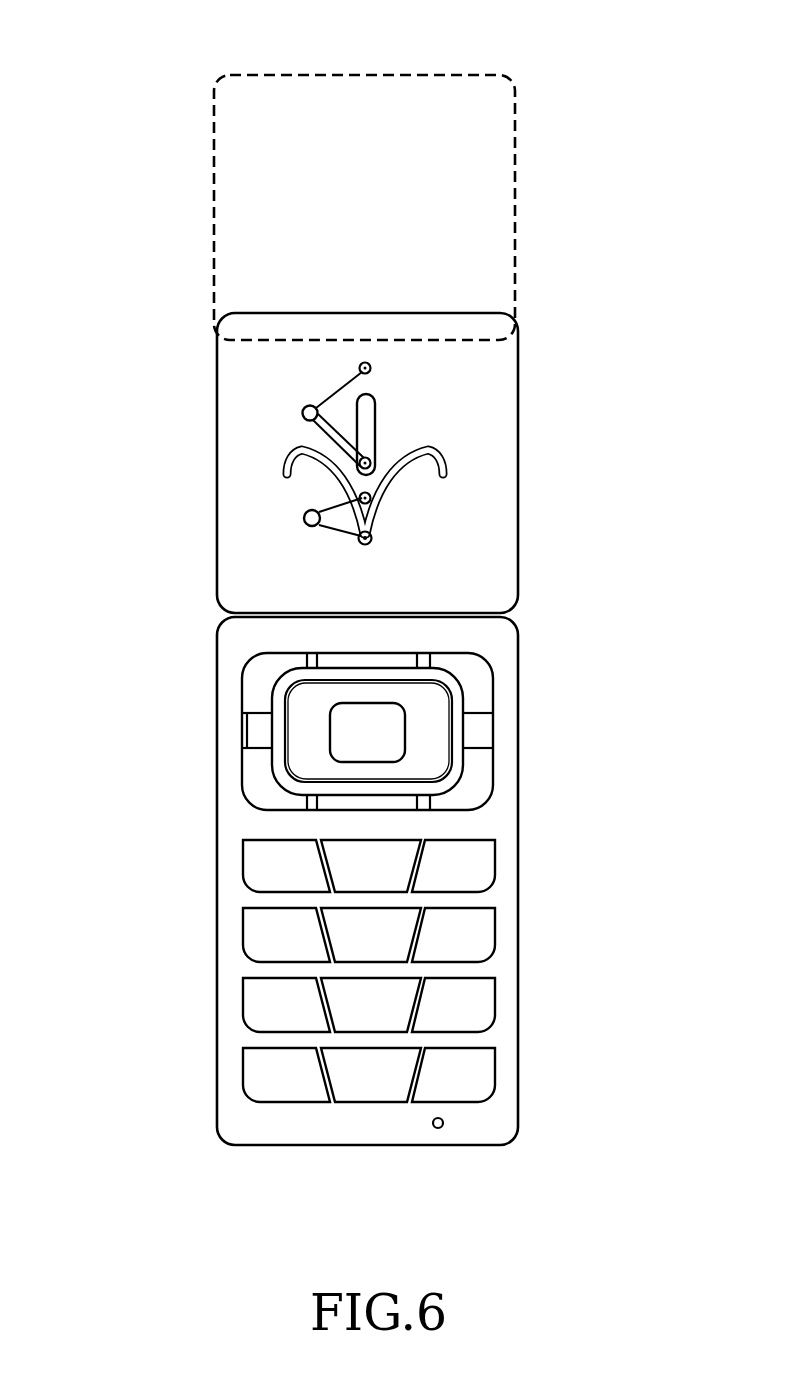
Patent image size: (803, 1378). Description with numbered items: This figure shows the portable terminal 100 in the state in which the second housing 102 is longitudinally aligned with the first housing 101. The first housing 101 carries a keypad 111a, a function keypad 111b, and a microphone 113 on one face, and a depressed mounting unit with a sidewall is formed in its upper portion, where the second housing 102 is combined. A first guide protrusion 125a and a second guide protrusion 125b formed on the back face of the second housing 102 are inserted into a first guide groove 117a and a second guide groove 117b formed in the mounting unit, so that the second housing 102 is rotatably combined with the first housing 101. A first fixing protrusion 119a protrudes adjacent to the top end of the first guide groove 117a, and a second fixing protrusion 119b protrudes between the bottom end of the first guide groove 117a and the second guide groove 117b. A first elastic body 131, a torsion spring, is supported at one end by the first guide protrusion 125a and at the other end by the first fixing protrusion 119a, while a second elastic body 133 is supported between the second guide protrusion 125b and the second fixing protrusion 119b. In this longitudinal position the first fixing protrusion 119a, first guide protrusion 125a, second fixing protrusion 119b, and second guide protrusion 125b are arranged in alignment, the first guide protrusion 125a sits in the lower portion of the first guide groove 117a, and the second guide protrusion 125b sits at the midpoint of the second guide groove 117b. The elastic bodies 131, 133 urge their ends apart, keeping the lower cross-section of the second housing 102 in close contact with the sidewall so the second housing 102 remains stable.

The portable terminal 100 is at (398, 36).
The first housing 101 is at (212, 903).
The second housing 102 is at (528, 195).
The keypad 111a is at (482, 931).
The function keypad 111b is at (482, 731).
The microphone 113 is at (436, 1128).
The first guide groove 117a is at (368, 418).
The second guide groove 117b is at (382, 513).
The first fixing protrusion 119a is at (371, 367).
The second fixing protrusion 119b is at (371, 497).
The first guide protrusion 125a is at (360, 460).
The second guide protrusion 125b is at (372, 538).
The first elastic body 131 is at (303, 410).
The second elastic body 133 is at (304, 518).